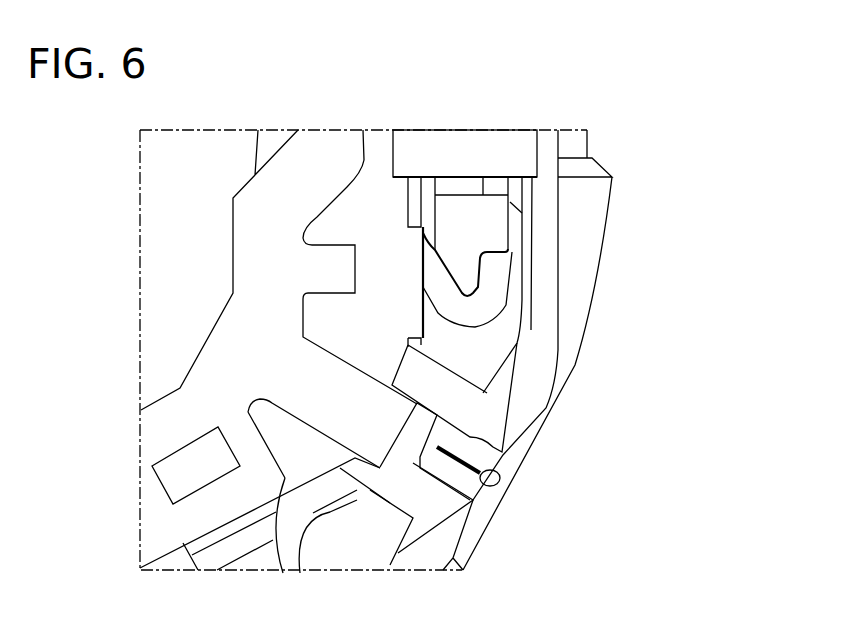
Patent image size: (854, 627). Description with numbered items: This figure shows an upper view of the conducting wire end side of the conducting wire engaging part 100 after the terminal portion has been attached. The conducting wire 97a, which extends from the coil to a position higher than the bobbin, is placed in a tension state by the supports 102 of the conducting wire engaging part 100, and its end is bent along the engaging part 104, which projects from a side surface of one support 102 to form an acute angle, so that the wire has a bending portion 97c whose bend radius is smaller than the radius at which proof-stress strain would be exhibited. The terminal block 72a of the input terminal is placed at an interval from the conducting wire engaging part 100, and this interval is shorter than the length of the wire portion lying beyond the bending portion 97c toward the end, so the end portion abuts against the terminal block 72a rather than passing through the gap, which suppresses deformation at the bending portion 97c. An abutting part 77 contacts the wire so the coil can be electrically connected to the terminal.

The terminal block 72a is at (380, 243).
The abutting part 77 is at (488, 157).
The conducting wire engaging part 100 is at (544, 144).
The support 102 is at (492, 224).
The conducting wire 97a is at (497, 272).
The engaging part 104 is at (474, 283).
The bending portion 97c is at (474, 307).